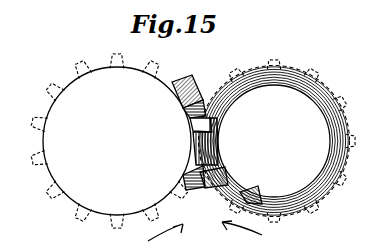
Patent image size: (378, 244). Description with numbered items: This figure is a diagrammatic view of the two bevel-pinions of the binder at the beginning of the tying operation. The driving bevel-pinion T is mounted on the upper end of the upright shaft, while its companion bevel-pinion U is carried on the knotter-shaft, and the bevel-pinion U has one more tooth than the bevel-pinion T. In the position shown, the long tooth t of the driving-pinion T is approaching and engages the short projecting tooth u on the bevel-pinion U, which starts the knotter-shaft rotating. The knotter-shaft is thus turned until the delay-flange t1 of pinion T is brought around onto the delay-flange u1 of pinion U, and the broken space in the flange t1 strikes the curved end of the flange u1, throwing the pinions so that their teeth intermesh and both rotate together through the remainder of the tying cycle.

The bevel-pinion U is at (111, 141).
The driving bevel-pinion T is at (277, 141).
The short projecting tooth u is at (194, 126).
The delay-flange u1 is at (190, 171).
The long tooth t is at (203, 177).
The delay-flange t1 is at (294, 208).